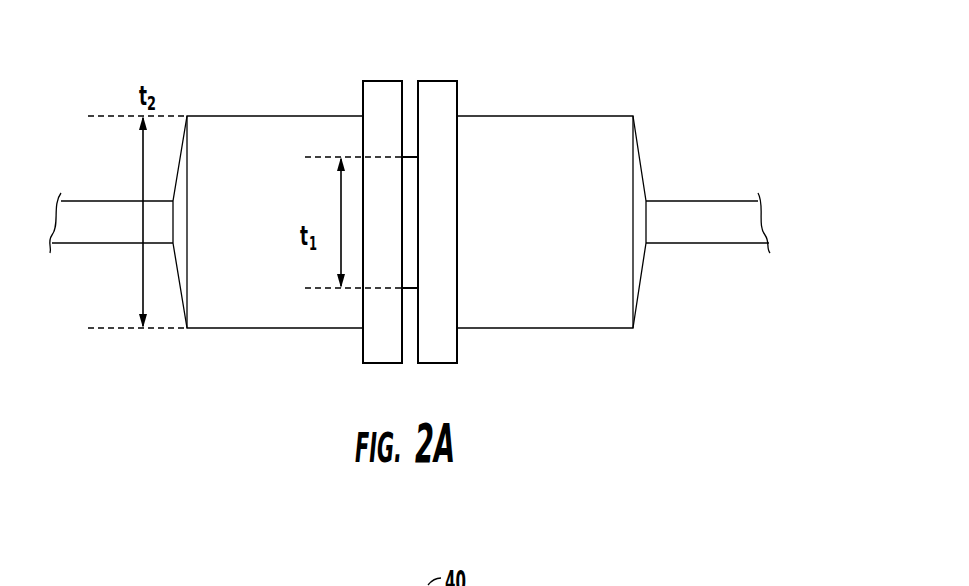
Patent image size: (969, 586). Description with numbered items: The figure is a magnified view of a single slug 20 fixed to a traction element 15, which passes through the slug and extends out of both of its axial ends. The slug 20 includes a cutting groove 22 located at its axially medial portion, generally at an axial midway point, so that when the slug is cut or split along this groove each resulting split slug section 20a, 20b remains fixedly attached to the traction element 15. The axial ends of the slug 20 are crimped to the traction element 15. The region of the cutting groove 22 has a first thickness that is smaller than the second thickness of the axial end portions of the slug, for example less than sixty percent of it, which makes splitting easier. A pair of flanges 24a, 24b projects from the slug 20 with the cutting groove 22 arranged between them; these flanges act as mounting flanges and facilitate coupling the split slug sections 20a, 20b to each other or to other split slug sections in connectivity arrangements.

The slug 20 is at (582, 110).
The split slug section 20a is at (245, 140).
The split slug section 20b is at (608, 138).
The cutting groove 22 is at (407, 157).
The flange 24a is at (380, 90).
The flange 24b is at (445, 355).
The traction element 15 is at (695, 232).